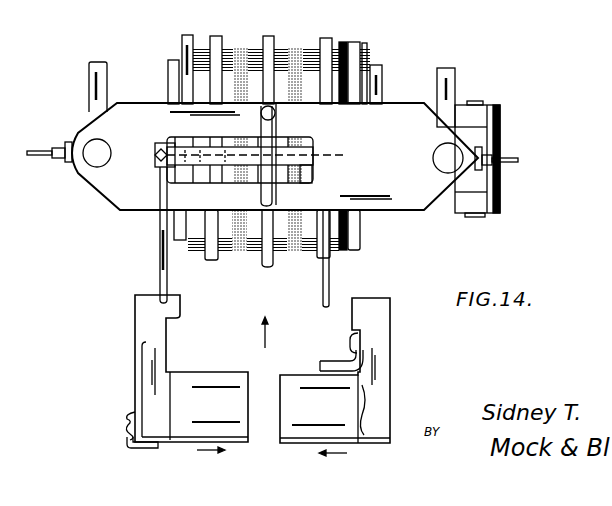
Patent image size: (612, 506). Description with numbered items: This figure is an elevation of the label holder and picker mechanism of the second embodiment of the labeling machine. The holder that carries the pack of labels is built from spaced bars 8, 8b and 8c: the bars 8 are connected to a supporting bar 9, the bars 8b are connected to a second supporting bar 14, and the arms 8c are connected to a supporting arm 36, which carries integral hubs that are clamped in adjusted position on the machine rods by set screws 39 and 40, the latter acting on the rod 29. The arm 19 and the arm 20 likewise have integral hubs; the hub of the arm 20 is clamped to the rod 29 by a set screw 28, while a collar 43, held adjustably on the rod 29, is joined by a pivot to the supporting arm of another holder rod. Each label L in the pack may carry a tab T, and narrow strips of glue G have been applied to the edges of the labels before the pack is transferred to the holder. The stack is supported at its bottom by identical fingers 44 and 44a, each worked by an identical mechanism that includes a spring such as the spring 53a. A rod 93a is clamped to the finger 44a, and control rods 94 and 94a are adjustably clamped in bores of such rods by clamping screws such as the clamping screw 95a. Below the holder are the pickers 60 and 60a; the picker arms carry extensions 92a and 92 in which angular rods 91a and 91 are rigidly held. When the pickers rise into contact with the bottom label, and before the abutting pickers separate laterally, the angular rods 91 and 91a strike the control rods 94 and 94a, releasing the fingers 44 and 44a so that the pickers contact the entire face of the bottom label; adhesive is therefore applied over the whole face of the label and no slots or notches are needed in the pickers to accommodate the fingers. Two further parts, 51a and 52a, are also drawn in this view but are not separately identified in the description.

The bars 8 is at (190, 36).
The bars 8b is at (355, 42).
The arms 8c is at (216, 37).
The supporting bar 9 is at (172, 60).
The second supporting bar 14 is at (382, 80).
The arm 19 is at (103, 80).
The arm 20 is at (455, 80).
The set screw 28 is at (100, 148).
The rod 29 is at (445, 165).
The supporting arm 36 is at (392, 210).
The set screw 39 is at (35, 151).
The set screw 40 is at (518, 160).
The collar 43 is at (497, 135).
The finger 44 is at (498, 112).
The finger 44a is at (268, 266).
The rod 51a is at (267, 160).
The block 52a is at (308, 172).
The spring 53a is at (279, 113).
The picker 60 is at (240, 438).
The picker 60a is at (303, 438).
The angular rod 91 is at (340, 362).
The angular rod 91a is at (140, 448).
The extension 92 is at (355, 344).
The extension 92a is at (126, 424).
The rod 93a is at (215, 165).
The control rod 94 is at (330, 275).
The control rod 94a is at (164, 215).
The clamping screw 95a is at (155, 156).
The glue G is at (243, 50).
The label L is at (340, 43).
The tab T is at (366, 43).